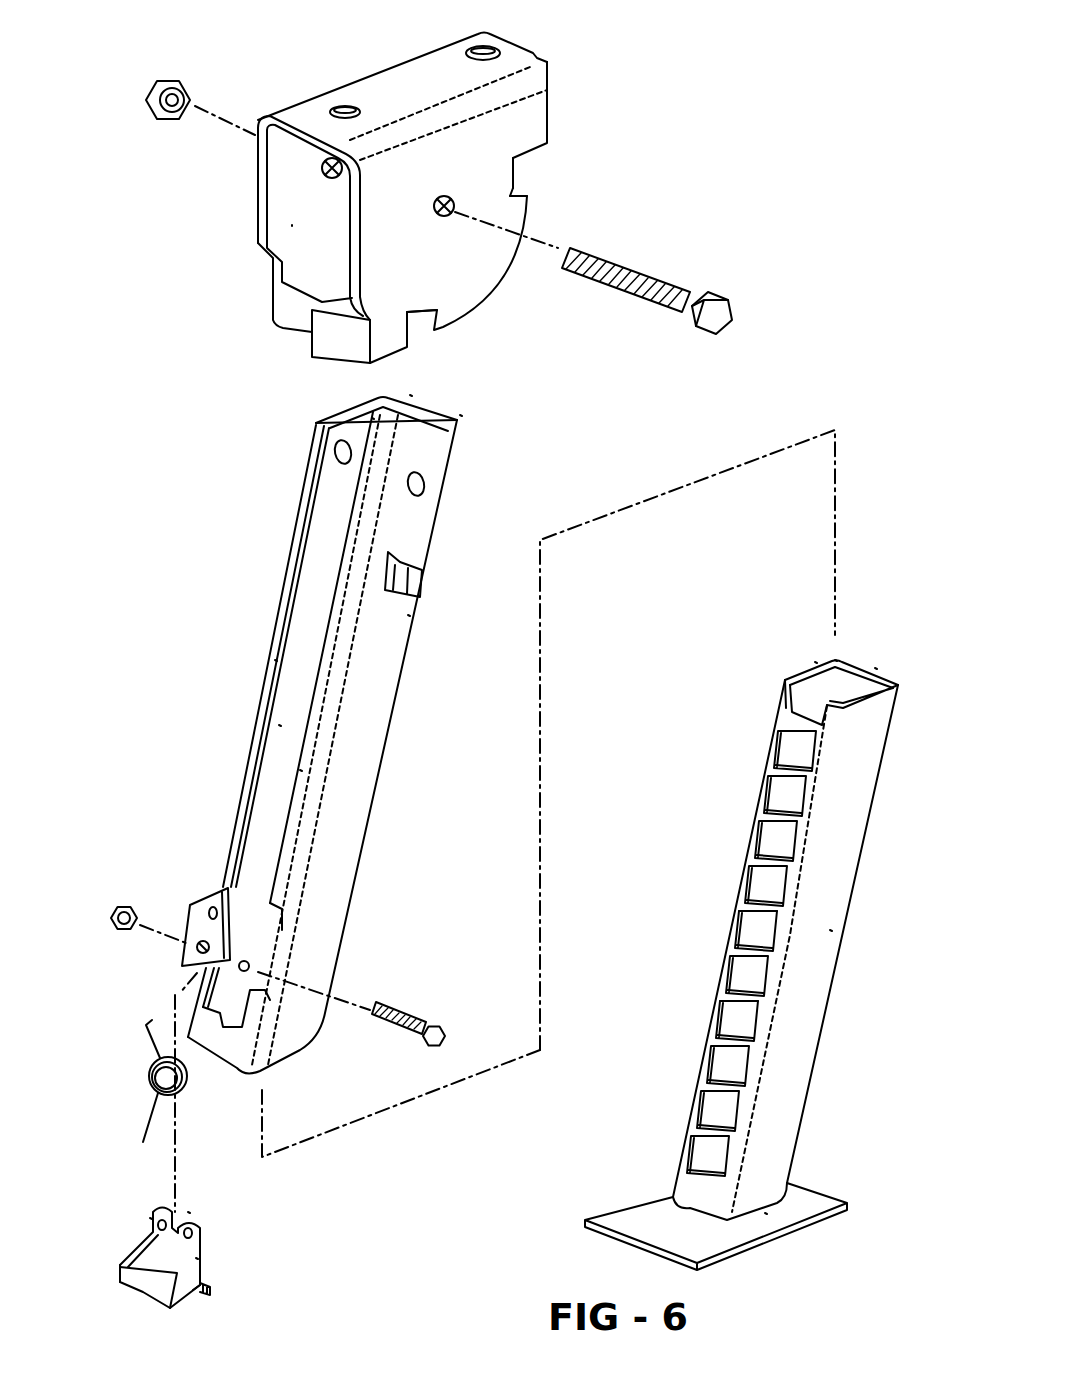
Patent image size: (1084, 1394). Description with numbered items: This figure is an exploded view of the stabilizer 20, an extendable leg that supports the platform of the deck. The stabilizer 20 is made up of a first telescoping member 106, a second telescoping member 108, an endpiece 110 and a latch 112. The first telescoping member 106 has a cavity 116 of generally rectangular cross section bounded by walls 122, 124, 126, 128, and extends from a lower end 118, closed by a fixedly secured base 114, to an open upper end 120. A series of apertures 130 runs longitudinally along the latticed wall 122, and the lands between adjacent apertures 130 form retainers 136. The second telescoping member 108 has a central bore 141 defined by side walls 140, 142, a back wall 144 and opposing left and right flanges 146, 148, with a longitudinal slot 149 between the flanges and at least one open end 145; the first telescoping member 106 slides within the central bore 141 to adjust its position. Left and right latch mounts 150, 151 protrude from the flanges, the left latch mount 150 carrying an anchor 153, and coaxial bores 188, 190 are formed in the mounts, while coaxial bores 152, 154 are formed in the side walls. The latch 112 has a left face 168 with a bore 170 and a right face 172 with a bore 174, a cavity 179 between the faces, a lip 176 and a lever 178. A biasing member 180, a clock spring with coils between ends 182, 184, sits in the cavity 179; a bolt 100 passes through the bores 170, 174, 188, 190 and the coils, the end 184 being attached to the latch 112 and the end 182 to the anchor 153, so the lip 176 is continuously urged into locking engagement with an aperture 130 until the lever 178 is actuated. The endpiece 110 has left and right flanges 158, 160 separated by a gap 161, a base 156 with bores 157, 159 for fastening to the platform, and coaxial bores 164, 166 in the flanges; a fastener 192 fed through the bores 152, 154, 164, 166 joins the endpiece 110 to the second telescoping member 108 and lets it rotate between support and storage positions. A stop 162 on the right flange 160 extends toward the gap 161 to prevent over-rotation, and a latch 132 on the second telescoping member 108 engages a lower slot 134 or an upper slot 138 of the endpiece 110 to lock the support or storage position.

The stabilizer 20 is at (200, 584).
The bolt 100 is at (420, 1030).
The first telescoping member 106 is at (825, 1120).
The second telescoping member 108 is at (390, 745).
The endpiece 110 is at (205, 290).
The latch 112 is at (132, 1250).
The base 114 is at (612, 1215).
The cavity 116 is at (855, 668).
The lower end 118 is at (765, 1213).
The upper end 120 is at (820, 668).
The latticed wall 122 is at (805, 705).
The wall 124 is at (876, 678).
The wall 126 is at (830, 930).
The wall 128 is at (760, 852).
The apertures 130 is at (730, 1015).
The latch 132 is at (433, 582).
The lower slot 134 is at (417, 327).
The retainers 136 is at (760, 990).
The upper slot 138 is at (520, 197).
The side wall 140 is at (372, 418).
The central bore 141 is at (460, 415).
The side wall 142 is at (408, 615).
The back wall 144 is at (410, 396).
The open end 145 is at (292, 1058).
The left flange 146 is at (275, 660).
The right flange 148 is at (300, 770).
The longitudinal slot 149 is at (279, 725).
The left latch mount 150 is at (185, 930).
The right latch mount 151 is at (270, 958).
The bore 152 is at (318, 447).
The anchor 153 is at (200, 905).
The bore 154 is at (432, 486).
The base 156 is at (523, 50).
The bore 157 is at (338, 106).
The left flange 158 is at (258, 205).
The bore 159 is at (487, 65).
The right flange 160 is at (513, 170).
The gap 161 is at (292, 225).
The stop 162 is at (308, 326).
The bore 164 is at (322, 170).
The bore 166 is at (445, 222).
The left face 168 is at (150, 1218).
The bore 170 is at (170, 1212).
The right face 172 is at (196, 1258).
The bore 174 is at (197, 1226).
The lip 176 is at (212, 1292).
The lever 178 is at (118, 1292).
The cavity 179 is at (190, 1212).
The biasing member 180 is at (150, 1068).
The end of biasing member 182 is at (150, 1025).
The end of biasing member 184 is at (148, 1120).
The bore 188 is at (255, 968).
The bore 190 is at (205, 945).
The fastener 192 is at (660, 272).